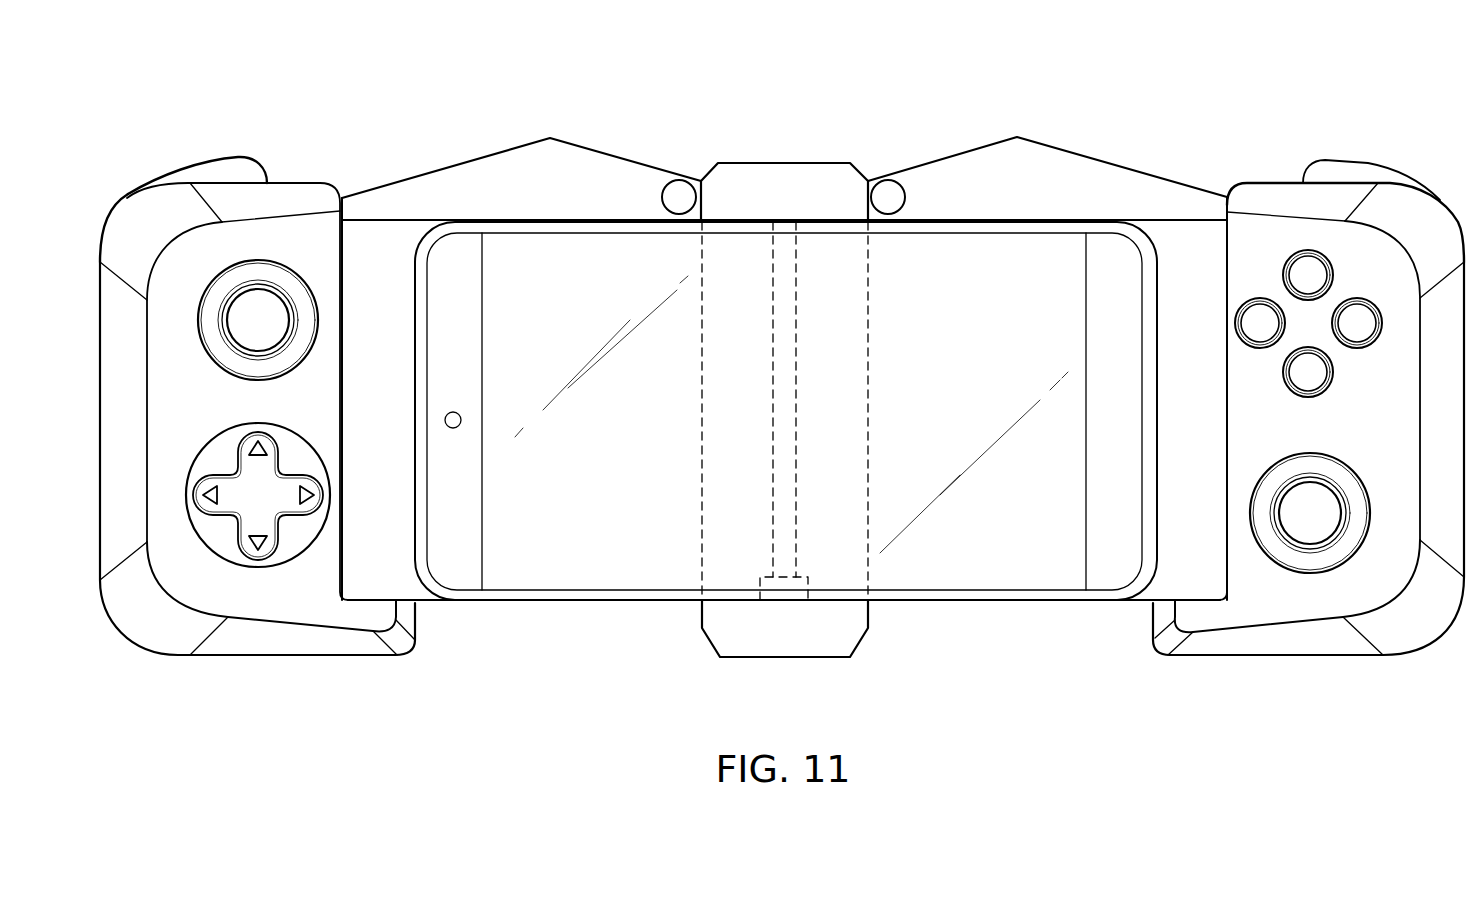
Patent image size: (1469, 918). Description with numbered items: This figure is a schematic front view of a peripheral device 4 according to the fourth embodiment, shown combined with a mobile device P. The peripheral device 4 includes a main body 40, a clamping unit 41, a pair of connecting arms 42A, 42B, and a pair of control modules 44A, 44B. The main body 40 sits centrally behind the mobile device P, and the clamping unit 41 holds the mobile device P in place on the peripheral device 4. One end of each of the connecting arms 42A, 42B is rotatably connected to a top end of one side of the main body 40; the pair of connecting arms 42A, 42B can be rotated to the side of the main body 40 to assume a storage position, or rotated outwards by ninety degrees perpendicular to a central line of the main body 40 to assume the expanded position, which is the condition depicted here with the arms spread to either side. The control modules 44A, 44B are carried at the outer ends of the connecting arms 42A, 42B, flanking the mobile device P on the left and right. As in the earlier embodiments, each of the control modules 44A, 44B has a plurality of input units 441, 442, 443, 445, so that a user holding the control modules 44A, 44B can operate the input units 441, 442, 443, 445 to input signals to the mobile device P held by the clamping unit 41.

The peripheral device 4 is at (782, 389).
The mobile device P is at (1022, 216).
The main body 40 is at (702, 413).
The clamping unit 41 is at (786, 180).
The connecting arm 42A is at (1090, 177).
The connecting arm 42B is at (475, 177).
The control module 44A is at (1265, 184).
The control module 44B is at (303, 182).
The input unit 441 is at (299, 347).
The input unit 442 is at (237, 460).
The input unit 443 is at (1305, 385).
The input unit 445 is at (238, 172).